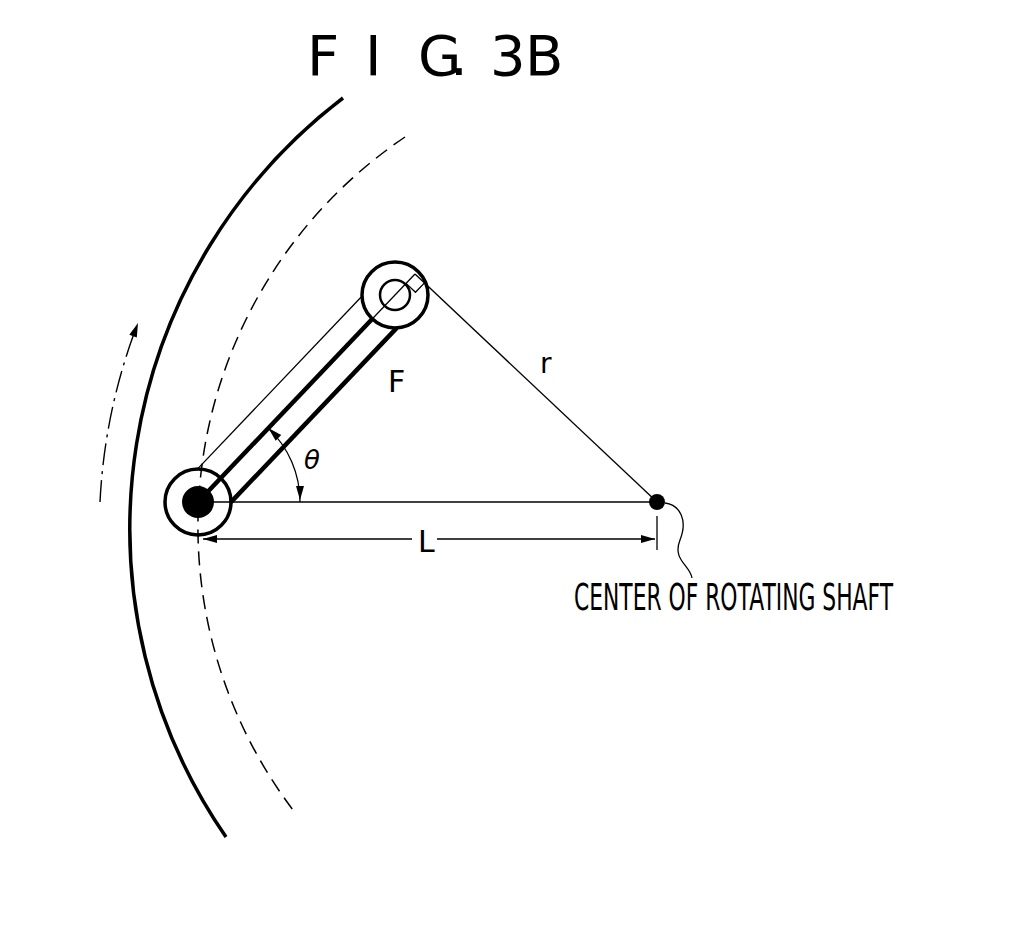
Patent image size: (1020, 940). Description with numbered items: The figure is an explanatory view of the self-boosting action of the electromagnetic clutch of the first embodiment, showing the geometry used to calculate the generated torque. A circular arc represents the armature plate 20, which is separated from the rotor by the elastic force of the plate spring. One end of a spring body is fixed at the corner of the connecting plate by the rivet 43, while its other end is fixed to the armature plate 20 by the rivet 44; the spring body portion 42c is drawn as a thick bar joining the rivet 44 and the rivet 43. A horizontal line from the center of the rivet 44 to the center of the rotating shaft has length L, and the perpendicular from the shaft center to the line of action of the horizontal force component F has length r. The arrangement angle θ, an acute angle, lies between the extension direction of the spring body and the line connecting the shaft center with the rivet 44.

The armature plate 20 is at (189, 313).
The lever 42c is at (335, 397).
The rivet 43 is at (393, 272).
The rivet 44 is at (172, 511).